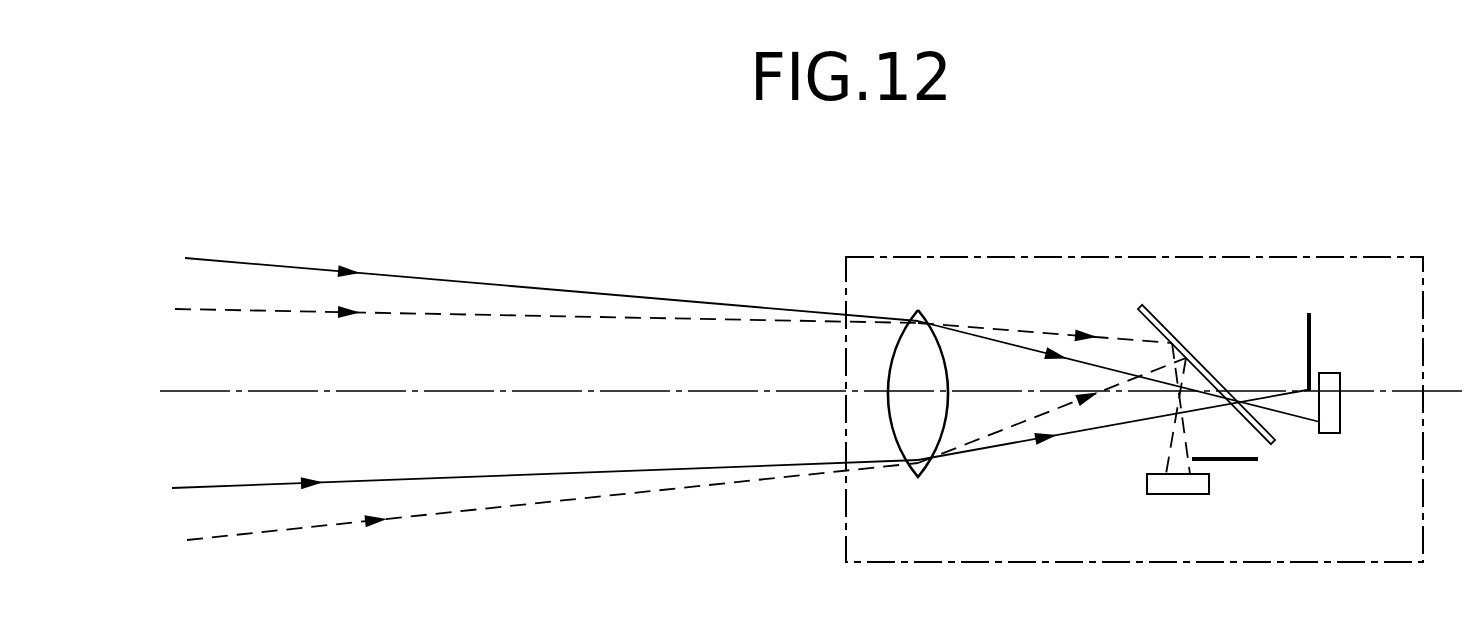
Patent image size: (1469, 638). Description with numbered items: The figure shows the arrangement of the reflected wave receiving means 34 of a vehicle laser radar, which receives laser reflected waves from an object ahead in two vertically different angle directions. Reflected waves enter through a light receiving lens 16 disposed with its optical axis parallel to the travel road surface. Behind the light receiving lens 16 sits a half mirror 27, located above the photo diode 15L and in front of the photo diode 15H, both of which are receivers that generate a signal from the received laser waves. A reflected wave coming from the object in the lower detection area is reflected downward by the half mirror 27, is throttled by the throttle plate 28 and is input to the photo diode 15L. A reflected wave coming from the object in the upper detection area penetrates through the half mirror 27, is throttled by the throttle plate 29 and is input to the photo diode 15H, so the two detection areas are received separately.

The reflected wave receiving means 34 is at (1097, 257).
The light receiving lens 16 is at (920, 400).
The half mirror 27 is at (1157, 315).
The throttle plate 28 is at (1238, 462).
The throttle plate 29 is at (1312, 332).
The photo diode 15H is at (1333, 375).
The photo diode 15L is at (1173, 493).